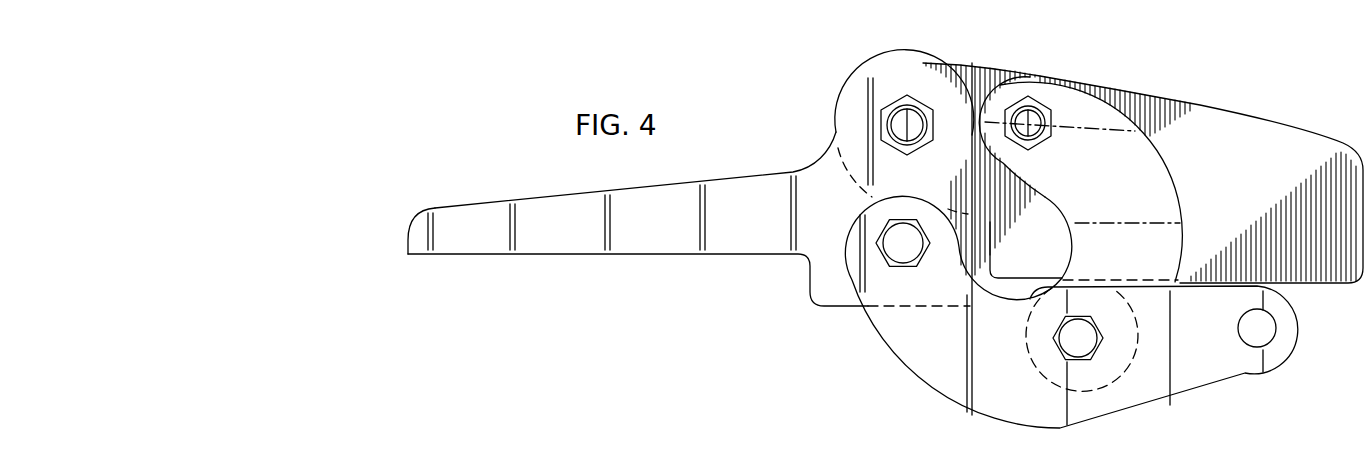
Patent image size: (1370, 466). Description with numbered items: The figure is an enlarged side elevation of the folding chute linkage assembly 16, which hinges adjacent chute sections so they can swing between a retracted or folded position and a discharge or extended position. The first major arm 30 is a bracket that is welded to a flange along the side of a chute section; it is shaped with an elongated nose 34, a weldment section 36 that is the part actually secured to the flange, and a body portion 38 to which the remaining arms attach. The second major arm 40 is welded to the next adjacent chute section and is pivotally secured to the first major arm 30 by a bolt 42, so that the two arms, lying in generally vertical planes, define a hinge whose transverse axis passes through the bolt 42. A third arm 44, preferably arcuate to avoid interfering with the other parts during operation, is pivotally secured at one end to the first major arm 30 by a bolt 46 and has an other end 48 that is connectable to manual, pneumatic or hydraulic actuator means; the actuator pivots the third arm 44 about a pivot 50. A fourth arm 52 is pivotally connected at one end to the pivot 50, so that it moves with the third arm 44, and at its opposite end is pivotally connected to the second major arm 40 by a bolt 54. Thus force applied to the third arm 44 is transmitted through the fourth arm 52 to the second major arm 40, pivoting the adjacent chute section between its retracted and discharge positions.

The folding chute linkage assembly 16 is at (741, 114).
The first major arm 30 is at (673, 250).
The elongated nose 34 is at (433, 216).
The weldment section 36 is at (537, 247).
The body portion 38 is at (905, 73).
The second major arm 40 is at (1295, 146).
The bolt 42 is at (895, 124).
The third arm 44 is at (920, 358).
The bolt 46 is at (906, 259).
The other end of third arm 48 is at (1264, 330).
The pivot 50 is at (1084, 340).
The fourth arm 52 is at (1152, 173).
The bolt 54 is at (1030, 118).